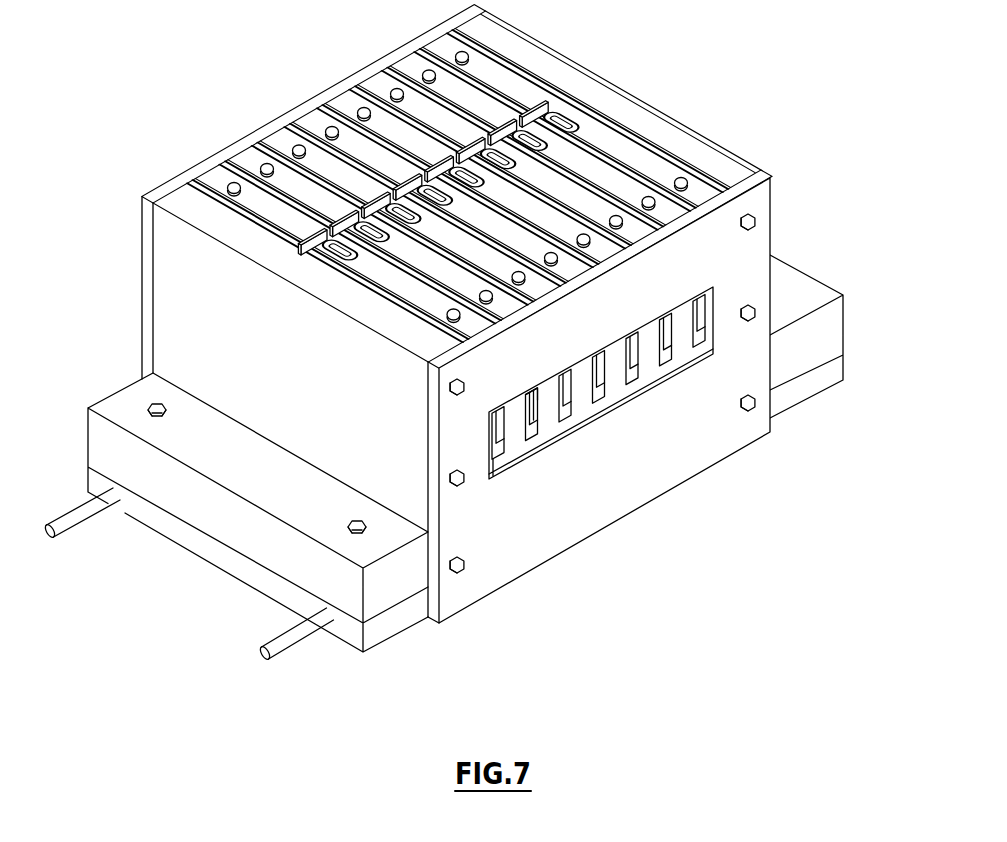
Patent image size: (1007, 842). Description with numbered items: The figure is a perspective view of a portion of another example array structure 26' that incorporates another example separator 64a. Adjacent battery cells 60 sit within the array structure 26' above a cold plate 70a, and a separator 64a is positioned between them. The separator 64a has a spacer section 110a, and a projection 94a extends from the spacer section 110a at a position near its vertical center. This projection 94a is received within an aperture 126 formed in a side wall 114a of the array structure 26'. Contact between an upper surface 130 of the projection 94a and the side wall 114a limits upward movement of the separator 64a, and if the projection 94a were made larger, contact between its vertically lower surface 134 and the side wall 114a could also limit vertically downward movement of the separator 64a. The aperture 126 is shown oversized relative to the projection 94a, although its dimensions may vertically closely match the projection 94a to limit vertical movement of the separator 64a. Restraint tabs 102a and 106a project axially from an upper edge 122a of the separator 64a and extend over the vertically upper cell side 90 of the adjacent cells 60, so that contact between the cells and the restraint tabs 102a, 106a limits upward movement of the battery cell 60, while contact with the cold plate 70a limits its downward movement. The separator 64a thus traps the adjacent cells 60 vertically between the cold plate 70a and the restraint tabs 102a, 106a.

The array structure 26' is at (494, 311).
The battery cell 60 is at (433, 301).
The vertically upper cell side 90 is at (388, 275).
The restraint tab 102a is at (590, 131).
The restraint tab 106a is at (537, 100).
The side wall 114a is at (503, 553).
The upper edge 122a is at (515, 317).
The aperture 126 is at (622, 378).
The separator 64a is at (531, 425).
The vertically lower surface 134 is at (530, 402).
The upper surface 130 is at (531, 418).
The projection 94a is at (562, 403).
The spacer section 110a is at (533, 422).
The cold plate 70a is at (232, 562).